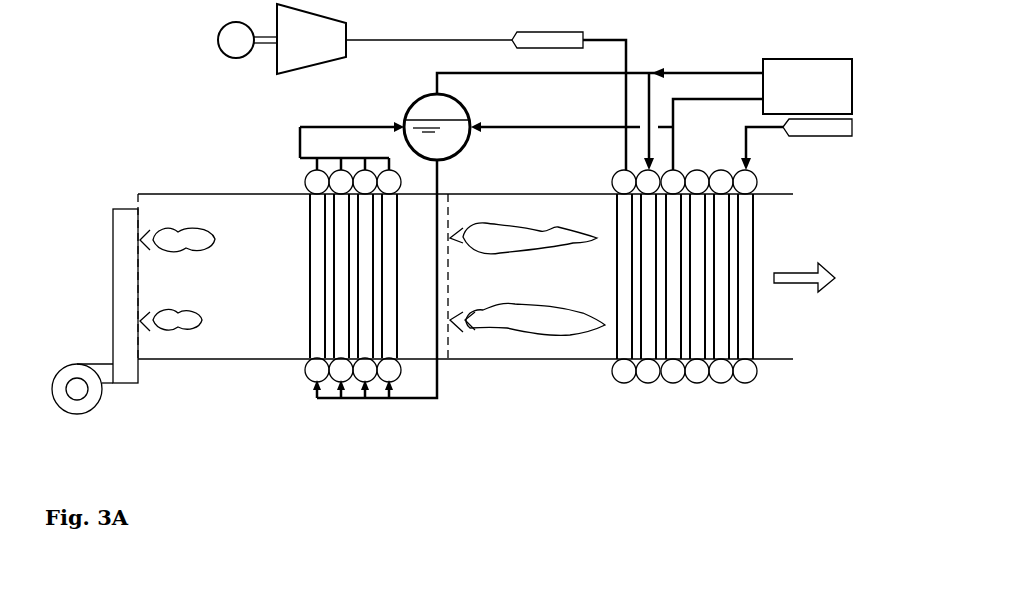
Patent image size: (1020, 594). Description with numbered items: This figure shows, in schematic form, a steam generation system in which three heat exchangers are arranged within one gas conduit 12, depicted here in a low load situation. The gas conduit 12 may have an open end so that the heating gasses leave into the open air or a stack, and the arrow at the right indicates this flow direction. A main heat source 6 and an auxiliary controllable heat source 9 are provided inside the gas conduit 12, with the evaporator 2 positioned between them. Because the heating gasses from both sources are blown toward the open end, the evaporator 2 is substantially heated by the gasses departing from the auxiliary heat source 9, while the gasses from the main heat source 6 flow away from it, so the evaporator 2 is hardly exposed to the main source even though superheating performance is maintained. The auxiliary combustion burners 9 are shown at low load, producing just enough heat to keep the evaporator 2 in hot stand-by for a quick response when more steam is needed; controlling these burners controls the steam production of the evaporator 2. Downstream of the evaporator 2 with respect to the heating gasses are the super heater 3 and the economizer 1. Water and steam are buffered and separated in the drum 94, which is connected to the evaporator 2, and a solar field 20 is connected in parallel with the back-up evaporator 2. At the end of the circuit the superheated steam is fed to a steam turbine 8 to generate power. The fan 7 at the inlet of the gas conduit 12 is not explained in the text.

The economizer 1 is at (713, 277).
The evaporator 2 is at (350, 278).
The super heater 3 is at (635, 277).
The main heat source 6 is at (460, 240).
The fan 7 is at (93, 372).
The steam turbine 8 is at (422, 87).
The auxiliary controllable heat source 9 is at (150, 245).
The gas conduit 12 is at (209, 193).
The solar field 20 is at (748, 114).
The drum 94 is at (437, 107).